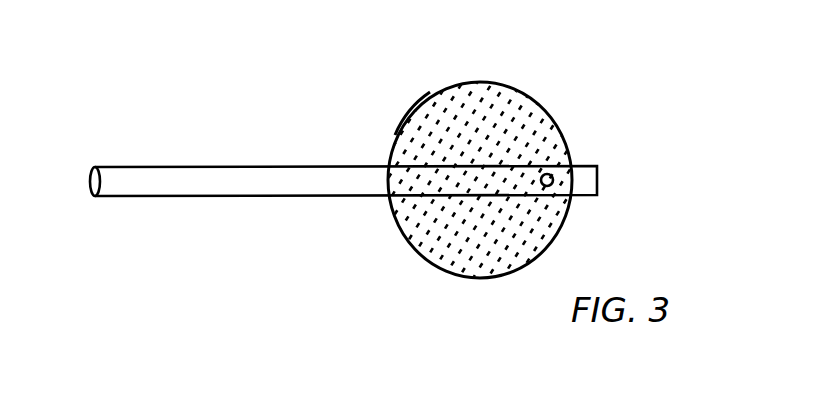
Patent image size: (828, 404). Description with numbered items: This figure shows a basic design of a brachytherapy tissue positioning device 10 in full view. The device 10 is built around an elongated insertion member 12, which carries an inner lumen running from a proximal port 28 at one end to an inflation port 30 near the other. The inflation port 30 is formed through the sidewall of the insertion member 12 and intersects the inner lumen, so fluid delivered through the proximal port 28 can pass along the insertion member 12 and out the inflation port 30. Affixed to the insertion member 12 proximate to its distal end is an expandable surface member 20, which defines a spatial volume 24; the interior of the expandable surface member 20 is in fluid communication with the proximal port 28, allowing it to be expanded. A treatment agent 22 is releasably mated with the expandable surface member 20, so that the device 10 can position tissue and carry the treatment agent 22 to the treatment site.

The tissue positioning device 10 is at (240, 76).
The insertion member 12 is at (320, 168).
The expandable surface member 20 is at (480, 81).
The treatment agent 22 is at (516, 127).
The spatial volume 24 is at (433, 123).
The proximal port 28 is at (88, 198).
The inflation port 30 is at (552, 183).